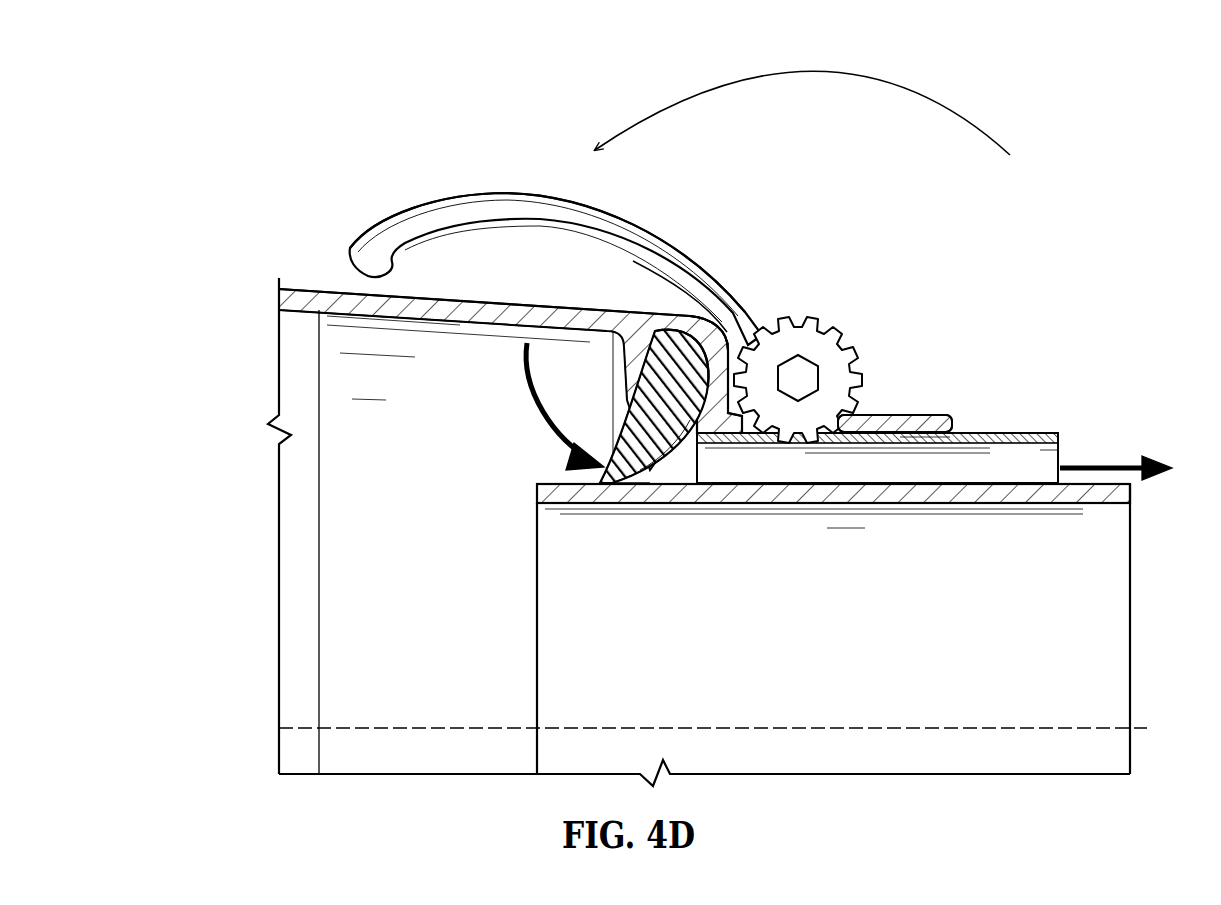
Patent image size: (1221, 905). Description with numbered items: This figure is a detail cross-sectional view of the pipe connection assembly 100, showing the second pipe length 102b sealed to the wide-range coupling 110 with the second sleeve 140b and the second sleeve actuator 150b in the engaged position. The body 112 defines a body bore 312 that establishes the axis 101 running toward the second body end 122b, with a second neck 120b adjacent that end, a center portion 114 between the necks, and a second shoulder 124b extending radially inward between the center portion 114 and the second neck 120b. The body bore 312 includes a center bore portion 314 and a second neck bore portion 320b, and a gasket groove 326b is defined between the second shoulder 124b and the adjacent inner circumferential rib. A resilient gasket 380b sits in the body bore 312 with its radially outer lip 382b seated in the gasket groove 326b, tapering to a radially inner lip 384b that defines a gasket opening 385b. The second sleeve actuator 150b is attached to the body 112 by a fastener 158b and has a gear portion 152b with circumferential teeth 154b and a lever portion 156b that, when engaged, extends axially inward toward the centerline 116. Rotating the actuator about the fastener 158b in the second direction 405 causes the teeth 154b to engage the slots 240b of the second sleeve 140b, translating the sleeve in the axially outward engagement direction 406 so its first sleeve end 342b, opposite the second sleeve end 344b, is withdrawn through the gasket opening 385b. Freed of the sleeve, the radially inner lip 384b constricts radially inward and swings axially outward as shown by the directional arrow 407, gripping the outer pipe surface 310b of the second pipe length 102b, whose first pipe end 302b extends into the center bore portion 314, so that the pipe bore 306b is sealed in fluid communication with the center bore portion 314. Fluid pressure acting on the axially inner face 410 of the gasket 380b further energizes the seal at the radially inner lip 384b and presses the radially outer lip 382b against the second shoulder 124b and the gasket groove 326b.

The pipe connection assembly 100 is at (318, 66).
The wide-range coupling 110 is at (572, 88).
The second direction 405 is at (830, 70).
The lever portion 156b is at (468, 205).
The second sleeve actuator 150b is at (677, 253).
The gasket groove 326b is at (633, 262).
The radially outer lip 382b is at (668, 322).
The body 112 is at (436, 305).
The center portion 114 is at (478, 311).
The second shoulder 124b is at (742, 348).
The gear portion 152b is at (797, 337).
The fastener 158b is at (800, 378).
The second neck 120b is at (880, 415).
The second body end 122b is at (950, 428).
The second sleeve 140b is at (1040, 432).
The second sleeve end 344b is at (1060, 450).
The engagement direction 406 is at (1110, 465).
The body bore 312 is at (288, 360).
The center bore portion 314 is at (287, 401).
The centerline 116 is at (320, 482).
The directional arrow 407 is at (540, 410).
The axially inner face 410 is at (640, 400).
The gasket 380b is at (655, 432).
The outer pipe surface 310b is at (548, 481).
The first pipe end 302b is at (537, 533).
The teeth 154b is at (877, 458).
The slots 240b is at (815, 440).
The second neck bore portion 320b is at (927, 440).
The first sleeve end 342b is at (697, 456).
The radially inner lip 384b is at (612, 486).
The gasket opening 385b is at (610, 470).
The pipe bore 306b is at (903, 535).
The second pipe length 102b is at (1053, 533).
The axis 101 is at (1090, 728).